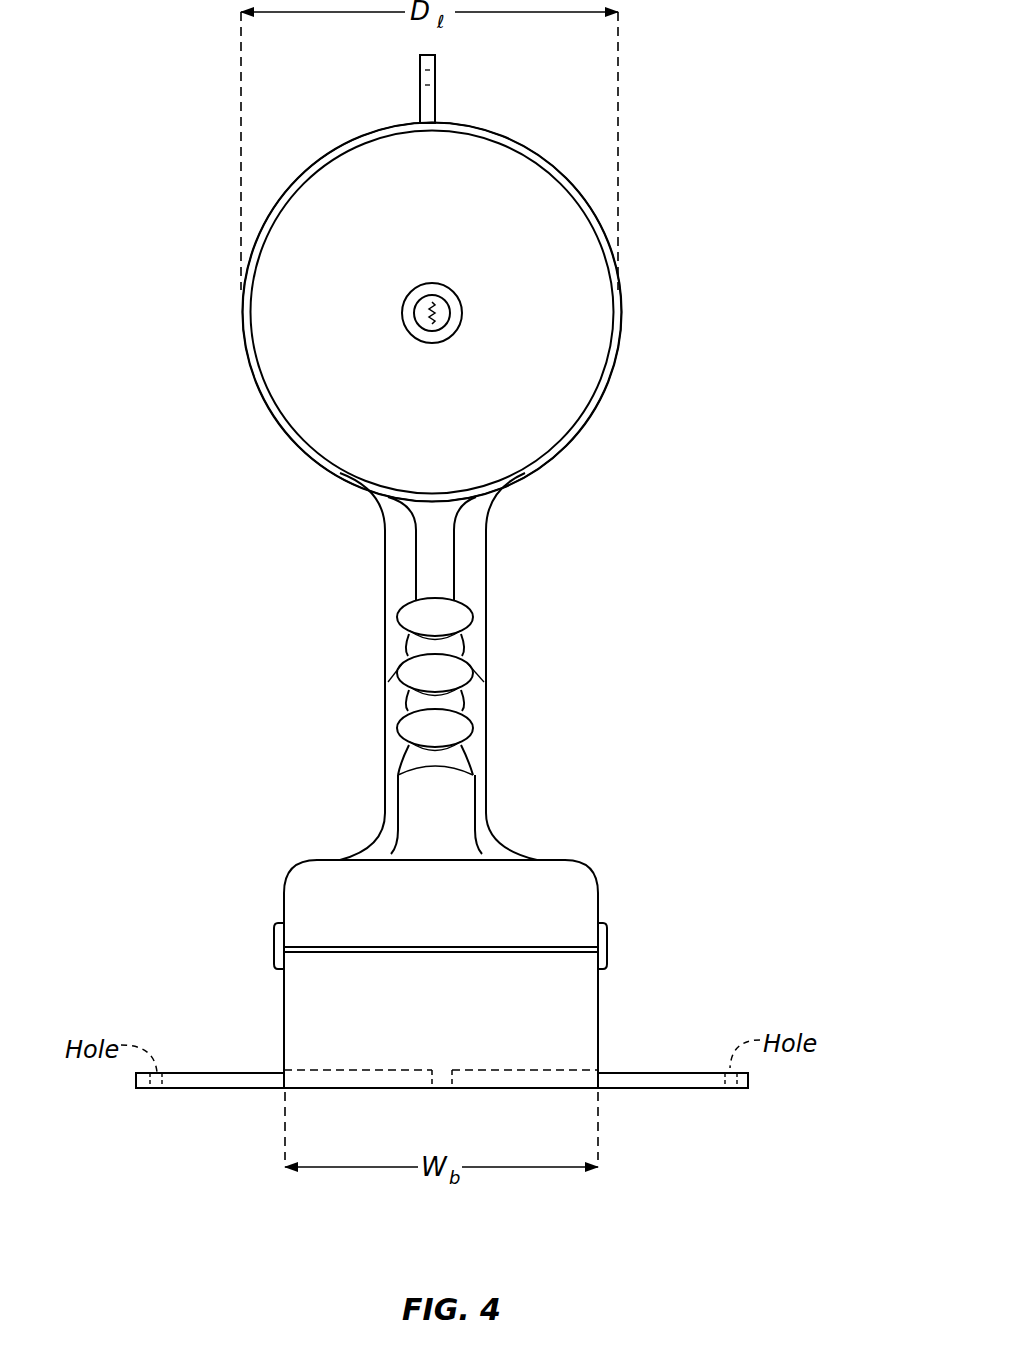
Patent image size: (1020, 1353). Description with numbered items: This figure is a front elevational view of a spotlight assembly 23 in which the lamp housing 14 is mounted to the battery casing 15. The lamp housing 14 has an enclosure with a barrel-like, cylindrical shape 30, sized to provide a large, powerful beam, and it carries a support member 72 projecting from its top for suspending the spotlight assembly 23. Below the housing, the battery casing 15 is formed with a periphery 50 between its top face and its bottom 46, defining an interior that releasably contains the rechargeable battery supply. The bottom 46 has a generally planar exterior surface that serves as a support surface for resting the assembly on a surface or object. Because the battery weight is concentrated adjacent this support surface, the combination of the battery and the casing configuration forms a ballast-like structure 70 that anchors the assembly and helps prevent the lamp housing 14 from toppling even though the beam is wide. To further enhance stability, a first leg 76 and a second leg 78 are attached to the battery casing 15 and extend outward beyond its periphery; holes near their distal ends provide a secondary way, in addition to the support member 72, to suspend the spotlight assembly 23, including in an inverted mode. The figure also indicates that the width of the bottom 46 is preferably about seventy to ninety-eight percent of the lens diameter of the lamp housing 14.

The lamp housing 14 is at (481, 301).
The support member 72 is at (421, 98).
The barrel-like cylindrical shape 30 is at (632, 322).
The spotlight assembly 23 is at (332, 572).
The battery casing 15 is at (465, 994).
The ballast-like structure 70 is at (616, 948).
The periphery 50 is at (308, 985).
The bottom 46 is at (446, 1090).
The first leg 76 is at (673, 1089).
The second leg 78 is at (210, 1092).